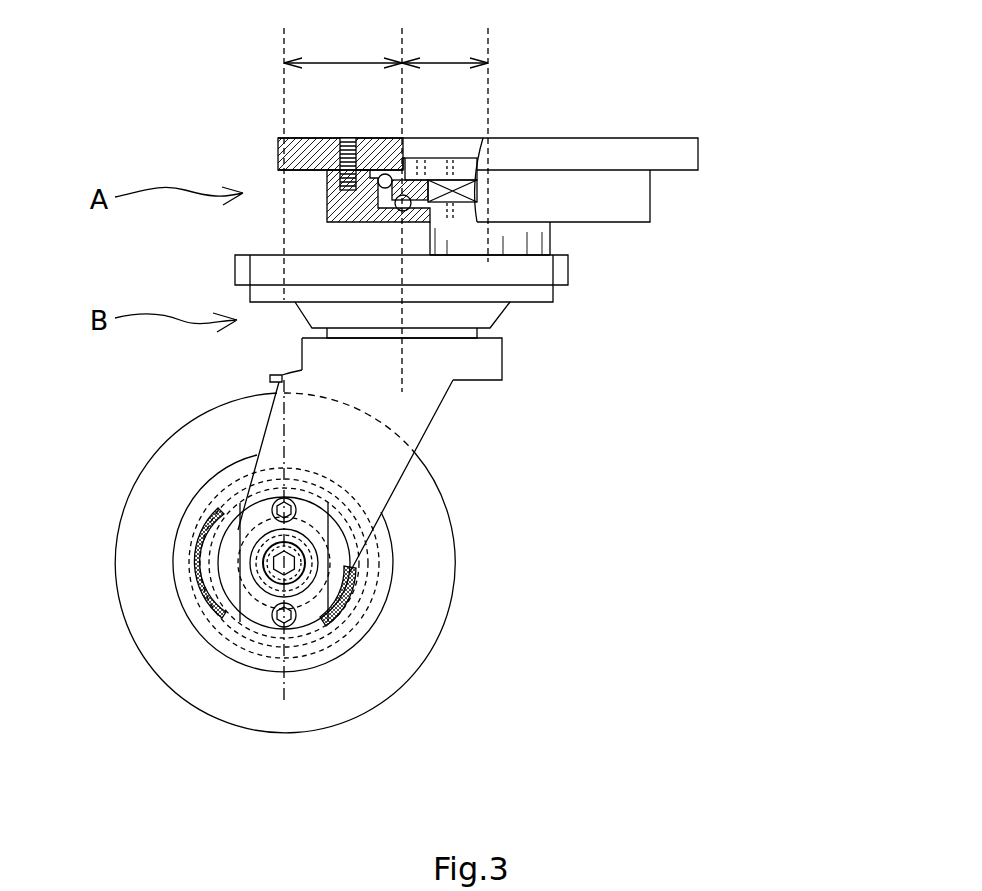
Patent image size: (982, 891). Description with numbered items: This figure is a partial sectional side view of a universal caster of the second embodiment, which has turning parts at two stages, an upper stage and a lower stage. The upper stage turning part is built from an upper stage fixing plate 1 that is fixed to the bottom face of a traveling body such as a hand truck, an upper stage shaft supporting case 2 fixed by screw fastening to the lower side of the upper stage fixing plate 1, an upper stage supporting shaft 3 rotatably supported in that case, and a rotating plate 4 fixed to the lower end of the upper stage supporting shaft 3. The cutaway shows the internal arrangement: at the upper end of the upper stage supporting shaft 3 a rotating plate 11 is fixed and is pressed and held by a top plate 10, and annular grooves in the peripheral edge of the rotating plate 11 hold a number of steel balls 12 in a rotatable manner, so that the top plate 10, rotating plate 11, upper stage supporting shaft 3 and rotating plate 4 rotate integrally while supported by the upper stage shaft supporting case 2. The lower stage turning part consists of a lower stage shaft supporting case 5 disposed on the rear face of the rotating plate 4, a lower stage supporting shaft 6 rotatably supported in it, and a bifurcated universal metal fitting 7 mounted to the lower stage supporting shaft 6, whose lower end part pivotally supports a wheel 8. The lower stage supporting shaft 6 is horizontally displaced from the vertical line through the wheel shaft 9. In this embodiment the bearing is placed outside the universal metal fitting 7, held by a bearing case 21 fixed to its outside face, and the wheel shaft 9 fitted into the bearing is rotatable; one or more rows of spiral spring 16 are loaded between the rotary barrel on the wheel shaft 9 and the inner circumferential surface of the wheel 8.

The upper stage fixing plate 1 is at (581, 148).
The upper stage shaft supporting case 2 is at (632, 200).
The upper stage supporting shaft 3 is at (535, 238).
The rotating plate 4 is at (248, 268).
The lower stage shaft supporting case 5 is at (492, 312).
The lower stage supporting shaft 6 is at (470, 333).
The universal metal fitting 7 is at (420, 412).
The wheel 8 is at (425, 617).
The wheel shaft 9 is at (305, 559).
The top plate 10 is at (422, 158).
The rotating plate 11 is at (352, 212).
The steel balls 12 is at (388, 176).
The spiral spring 16 is at (213, 588).
The bearing case 21 is at (322, 512).